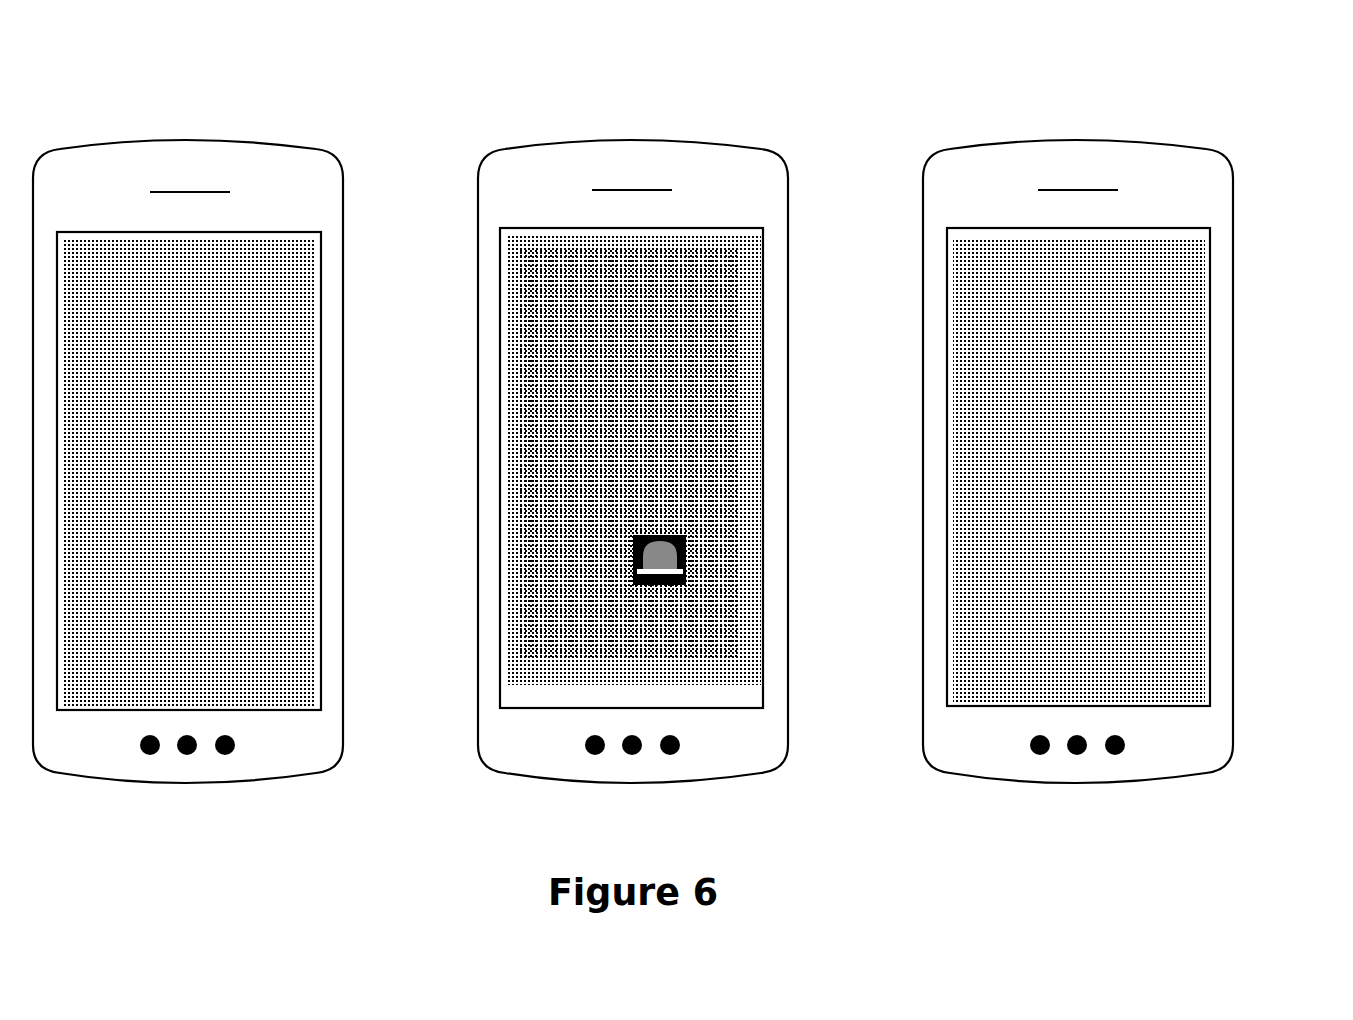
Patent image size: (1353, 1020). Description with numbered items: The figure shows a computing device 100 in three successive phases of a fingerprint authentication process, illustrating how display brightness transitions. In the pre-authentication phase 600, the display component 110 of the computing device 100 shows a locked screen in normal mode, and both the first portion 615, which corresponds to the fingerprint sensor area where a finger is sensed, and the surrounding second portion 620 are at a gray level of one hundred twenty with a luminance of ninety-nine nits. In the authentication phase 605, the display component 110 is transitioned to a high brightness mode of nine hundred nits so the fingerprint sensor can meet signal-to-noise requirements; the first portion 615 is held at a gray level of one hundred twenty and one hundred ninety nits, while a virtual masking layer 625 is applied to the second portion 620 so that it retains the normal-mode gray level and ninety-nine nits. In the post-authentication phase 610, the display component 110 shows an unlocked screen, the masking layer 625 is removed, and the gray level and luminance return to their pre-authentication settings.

The pre-authentication phase 600 is at (256, 44).
The authentication phase 605 is at (696, 42).
The post-authentication phase 610 is at (1146, 41).
The computing device 100 is at (633, 461).
The display component 110 is at (633, 469).
The first portion 615 is at (250, 584).
The second portion 620 is at (1245, 520).
The masking layer 625 is at (750, 343).